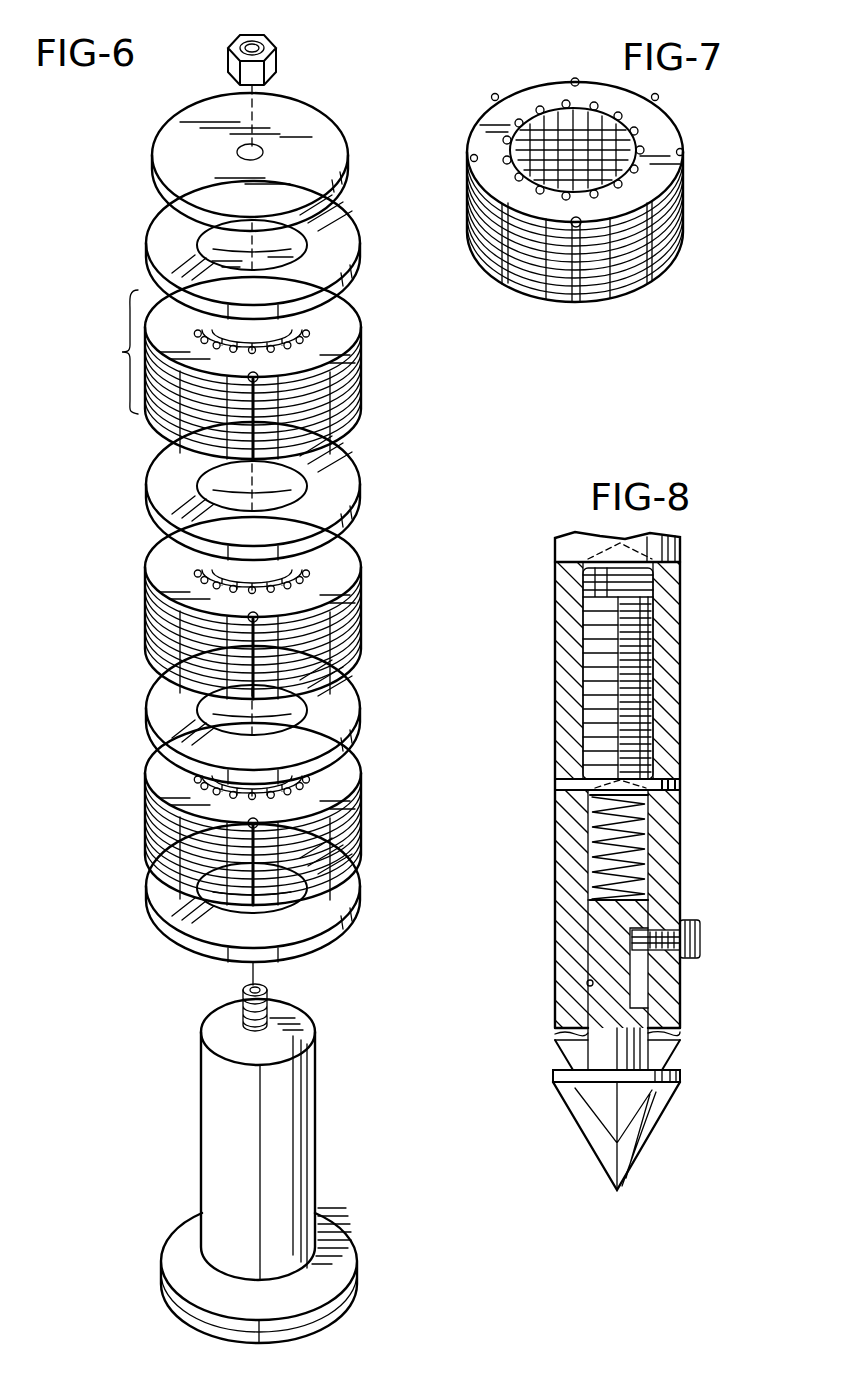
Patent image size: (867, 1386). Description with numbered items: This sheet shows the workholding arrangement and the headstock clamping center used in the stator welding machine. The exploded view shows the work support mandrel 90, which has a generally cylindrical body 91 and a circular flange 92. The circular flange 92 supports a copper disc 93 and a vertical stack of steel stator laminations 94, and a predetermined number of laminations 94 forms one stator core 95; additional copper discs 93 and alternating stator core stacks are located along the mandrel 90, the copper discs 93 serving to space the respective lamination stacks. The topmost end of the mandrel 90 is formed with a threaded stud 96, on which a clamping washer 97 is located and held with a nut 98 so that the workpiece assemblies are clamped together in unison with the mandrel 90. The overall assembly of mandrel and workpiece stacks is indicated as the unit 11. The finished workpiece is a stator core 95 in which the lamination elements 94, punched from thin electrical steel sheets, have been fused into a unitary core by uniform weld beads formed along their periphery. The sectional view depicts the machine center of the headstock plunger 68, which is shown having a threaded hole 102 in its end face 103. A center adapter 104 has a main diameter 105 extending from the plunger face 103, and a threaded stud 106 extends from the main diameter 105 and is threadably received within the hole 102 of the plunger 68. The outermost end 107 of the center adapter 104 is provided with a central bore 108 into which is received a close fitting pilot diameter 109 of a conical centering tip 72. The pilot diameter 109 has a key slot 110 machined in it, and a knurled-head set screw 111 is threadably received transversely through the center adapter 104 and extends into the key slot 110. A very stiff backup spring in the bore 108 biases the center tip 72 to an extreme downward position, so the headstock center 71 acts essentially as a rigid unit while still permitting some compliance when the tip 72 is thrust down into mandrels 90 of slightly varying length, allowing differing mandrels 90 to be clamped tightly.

In FIG. 6, the laminated core assembly 11 is at (122, 536).
In FIG. 6, the nut 98 is at (232, 62).
In FIG. 6, the clamping washer 97 is at (182, 117).
In FIG. 6, the copper disc 93 is at (165, 215).
In FIG. 6, the stator laminations 94 is at (352, 378).
In FIG. 7, the stator laminations 94 is at (466, 206).
In FIG. 6, the stator core 95 is at (127, 352).
In FIG. 7, the stator core 95 is at (690, 210).
In FIG. 6, the work support mandrel 90 is at (199, 1167).
In FIG. 6, the threaded stud 96 is at (245, 1000).
In FIG. 6, the cylindrical body 91 is at (205, 1092).
In FIG. 6, the circular flange 92 is at (178, 1240).
In FIG. 8, the headstock plunger 68 is at (553, 548).
In FIG. 8, the threaded hole 102 is at (648, 590).
In FIG. 8, the threaded stud 106 is at (643, 647).
In FIG. 8, the end face 103 is at (580, 798).
In FIG. 8, the center adapter 104 is at (684, 819).
In FIG. 8, the main diameter 105 is at (556, 865).
In FIG. 8, the pilot diameter 109 is at (588, 923).
In FIG. 8, the central bore 108 is at (587, 983).
In FIG. 8, the key slot 110 is at (656, 962).
In FIG. 8, the knurled-head set screw 111 is at (700, 926).
In FIG. 8, the outermost end 107 is at (662, 1040).
In FIG. 8, the conical centering tip 72 is at (585, 1097).
In FIG. 8, the headstock center 71 is at (582, 1145).